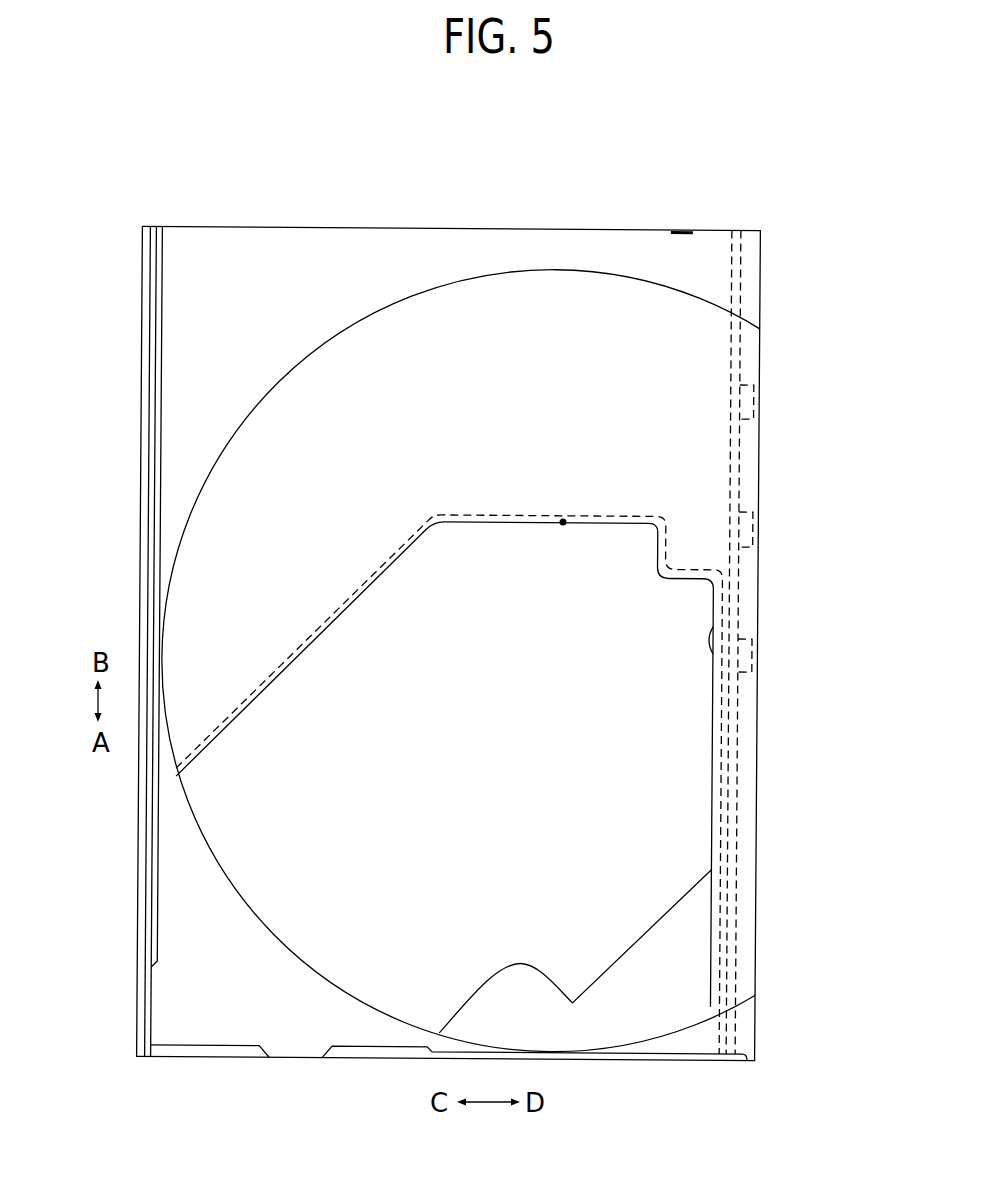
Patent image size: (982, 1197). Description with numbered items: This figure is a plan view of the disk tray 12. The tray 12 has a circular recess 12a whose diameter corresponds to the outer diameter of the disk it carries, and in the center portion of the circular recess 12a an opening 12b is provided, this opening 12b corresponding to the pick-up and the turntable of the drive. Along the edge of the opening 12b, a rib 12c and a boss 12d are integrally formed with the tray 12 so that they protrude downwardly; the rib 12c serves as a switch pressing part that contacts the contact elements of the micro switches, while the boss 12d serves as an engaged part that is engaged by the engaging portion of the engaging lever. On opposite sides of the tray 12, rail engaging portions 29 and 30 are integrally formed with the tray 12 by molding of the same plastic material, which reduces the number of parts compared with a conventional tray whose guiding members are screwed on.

The tray 12 is at (354, 165).
The circular recess 12a is at (573, 313).
The opening 12b is at (422, 567).
The rib 12c is at (515, 512).
The boss 12d is at (563, 525).
The rail engaging portion 29 is at (133, 537).
The rail engaging portion 30 is at (768, 557).